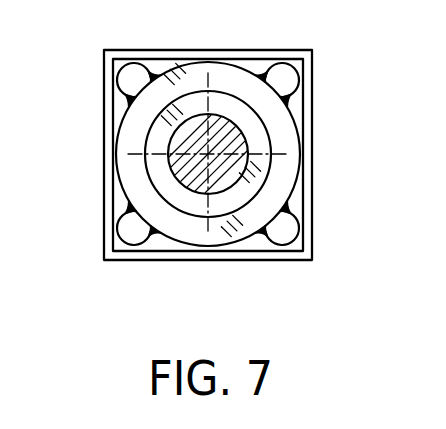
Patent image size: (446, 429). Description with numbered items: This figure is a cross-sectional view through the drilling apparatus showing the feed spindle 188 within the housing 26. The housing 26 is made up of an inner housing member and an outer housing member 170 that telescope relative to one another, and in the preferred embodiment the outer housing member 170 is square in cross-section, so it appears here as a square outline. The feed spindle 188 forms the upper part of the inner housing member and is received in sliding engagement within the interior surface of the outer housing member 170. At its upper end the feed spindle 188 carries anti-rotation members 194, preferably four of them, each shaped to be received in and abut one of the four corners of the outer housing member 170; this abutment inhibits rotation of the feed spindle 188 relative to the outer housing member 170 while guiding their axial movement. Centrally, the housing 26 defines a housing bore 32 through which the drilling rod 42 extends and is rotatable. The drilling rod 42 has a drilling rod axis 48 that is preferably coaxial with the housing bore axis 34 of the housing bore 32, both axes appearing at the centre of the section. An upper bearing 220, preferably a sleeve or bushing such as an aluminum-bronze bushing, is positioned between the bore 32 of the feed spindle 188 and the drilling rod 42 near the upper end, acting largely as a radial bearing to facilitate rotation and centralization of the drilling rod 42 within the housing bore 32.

The housing 26 is at (273, 253).
The housing bore 32 is at (245, 138).
The housing bore axis 34 is at (242, 173).
The drilling rod 42 is at (182, 140).
The drilling rod axis 48 is at (237, 172).
The outer housing member 170 is at (307, 198).
The feed spindle 188 is at (188, 228).
The anti-rotation members 194 is at (282, 73).
The upper bearing 220 is at (160, 168).